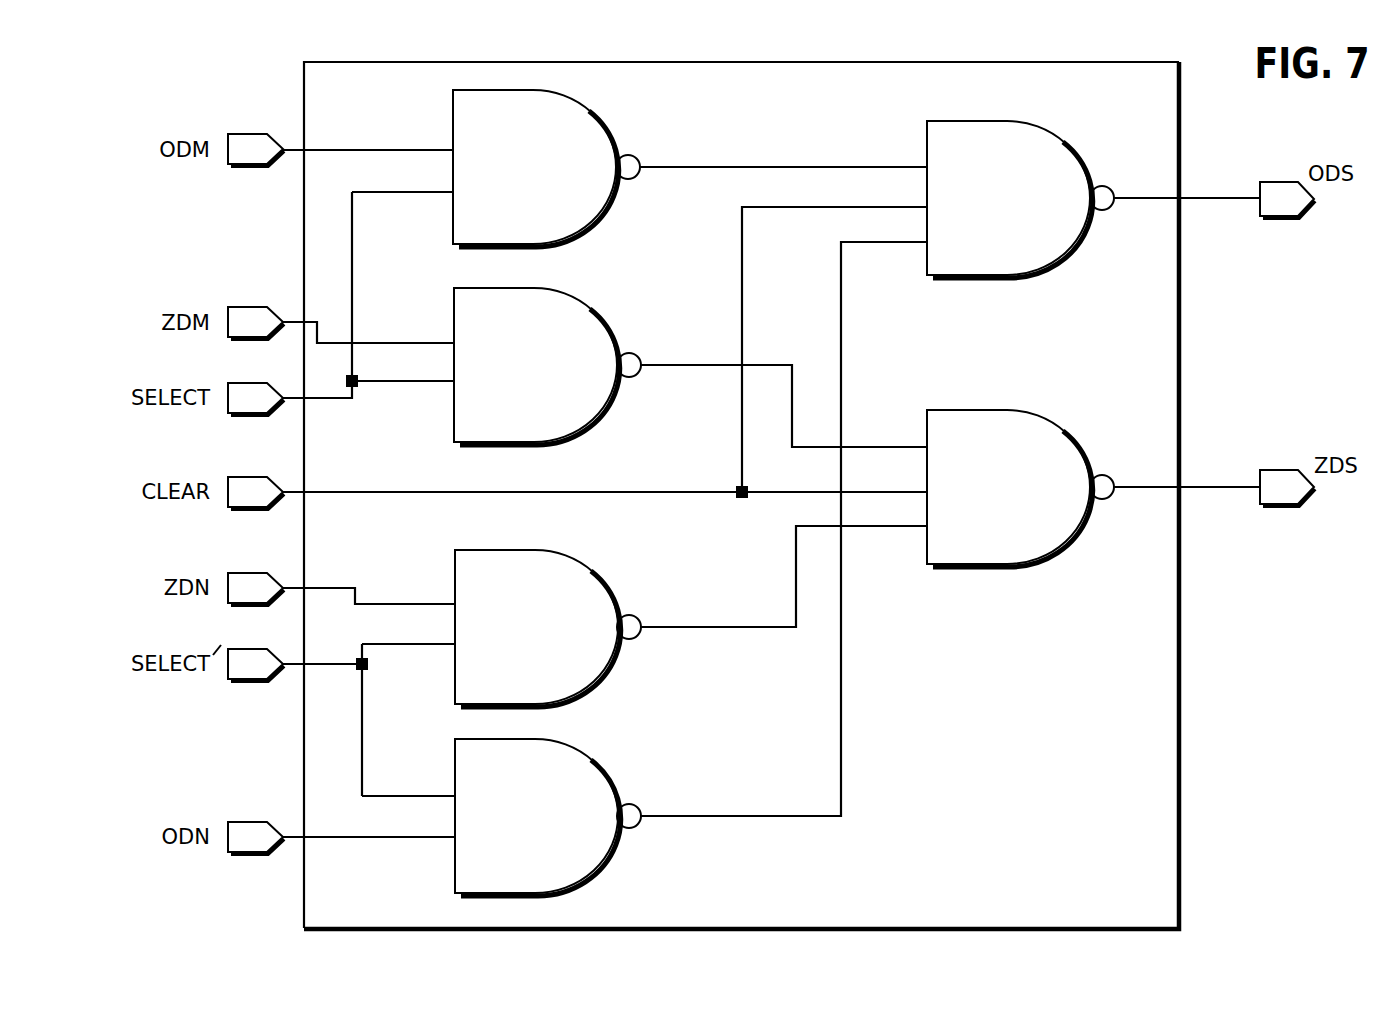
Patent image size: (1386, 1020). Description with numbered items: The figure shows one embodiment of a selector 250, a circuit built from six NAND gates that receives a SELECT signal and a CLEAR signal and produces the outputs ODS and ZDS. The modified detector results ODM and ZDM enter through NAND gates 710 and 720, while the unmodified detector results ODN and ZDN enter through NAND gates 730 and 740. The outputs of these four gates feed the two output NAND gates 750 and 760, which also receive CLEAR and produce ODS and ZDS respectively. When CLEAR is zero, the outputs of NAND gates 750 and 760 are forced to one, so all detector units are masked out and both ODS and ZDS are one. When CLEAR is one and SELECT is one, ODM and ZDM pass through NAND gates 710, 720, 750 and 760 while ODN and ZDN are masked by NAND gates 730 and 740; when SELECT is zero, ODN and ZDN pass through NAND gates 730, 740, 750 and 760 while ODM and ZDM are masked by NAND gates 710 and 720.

The selector 250 is at (1130, 107).
The NAND gate 710 is at (546, 168).
The NAND gate 720 is at (547, 366).
The NAND gate 730 is at (548, 628).
The NAND gate 740 is at (548, 817).
The NAND gate 750 is at (1020, 199).
The NAND gate 760 is at (1020, 488).